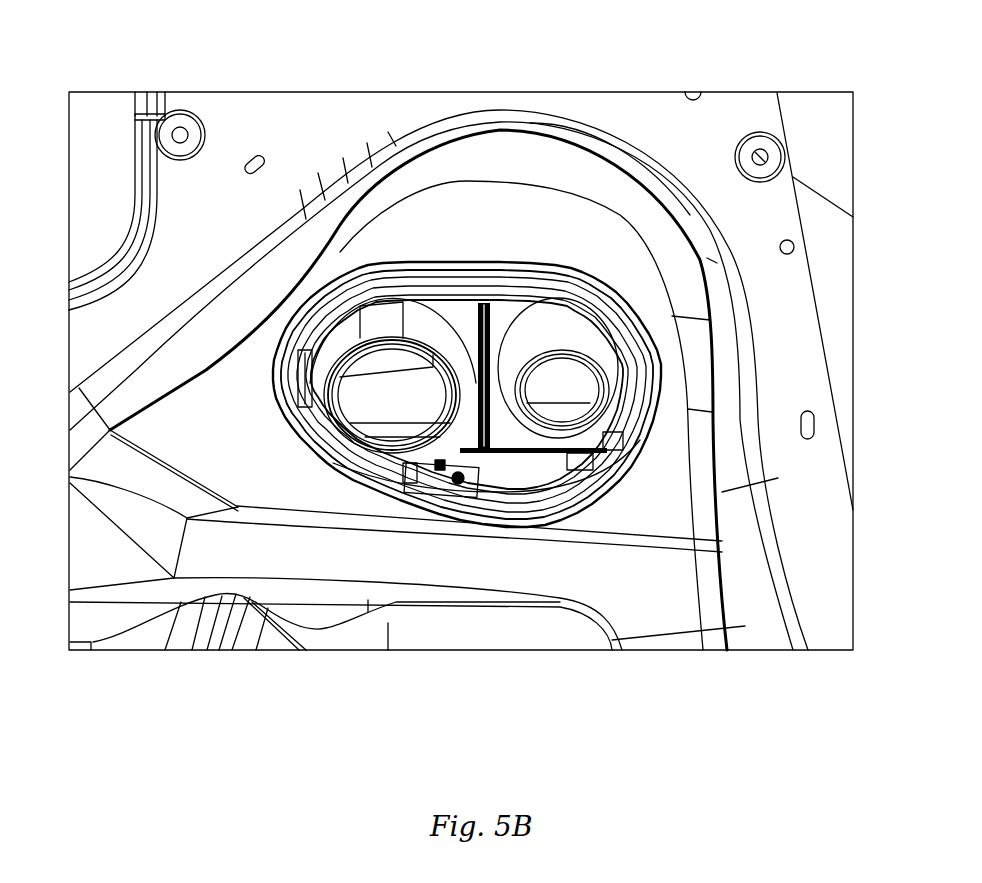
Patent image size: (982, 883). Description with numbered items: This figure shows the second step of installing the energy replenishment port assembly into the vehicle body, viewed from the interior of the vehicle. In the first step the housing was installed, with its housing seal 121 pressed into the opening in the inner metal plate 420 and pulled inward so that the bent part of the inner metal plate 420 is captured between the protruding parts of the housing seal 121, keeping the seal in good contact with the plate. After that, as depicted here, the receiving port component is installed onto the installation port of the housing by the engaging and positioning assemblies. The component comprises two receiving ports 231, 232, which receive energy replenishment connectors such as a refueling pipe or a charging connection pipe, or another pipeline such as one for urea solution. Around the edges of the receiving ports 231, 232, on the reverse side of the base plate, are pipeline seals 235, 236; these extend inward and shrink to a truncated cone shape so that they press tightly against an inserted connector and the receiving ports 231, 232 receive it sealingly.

The housing seal 121 is at (633, 353).
The receiving port 231 is at (398, 395).
The receiving port 232 is at (563, 387).
The pipeline seal 235 is at (381, 323).
The pipeline seal 236 is at (562, 338).
The inner metal plate 420 is at (548, 205).